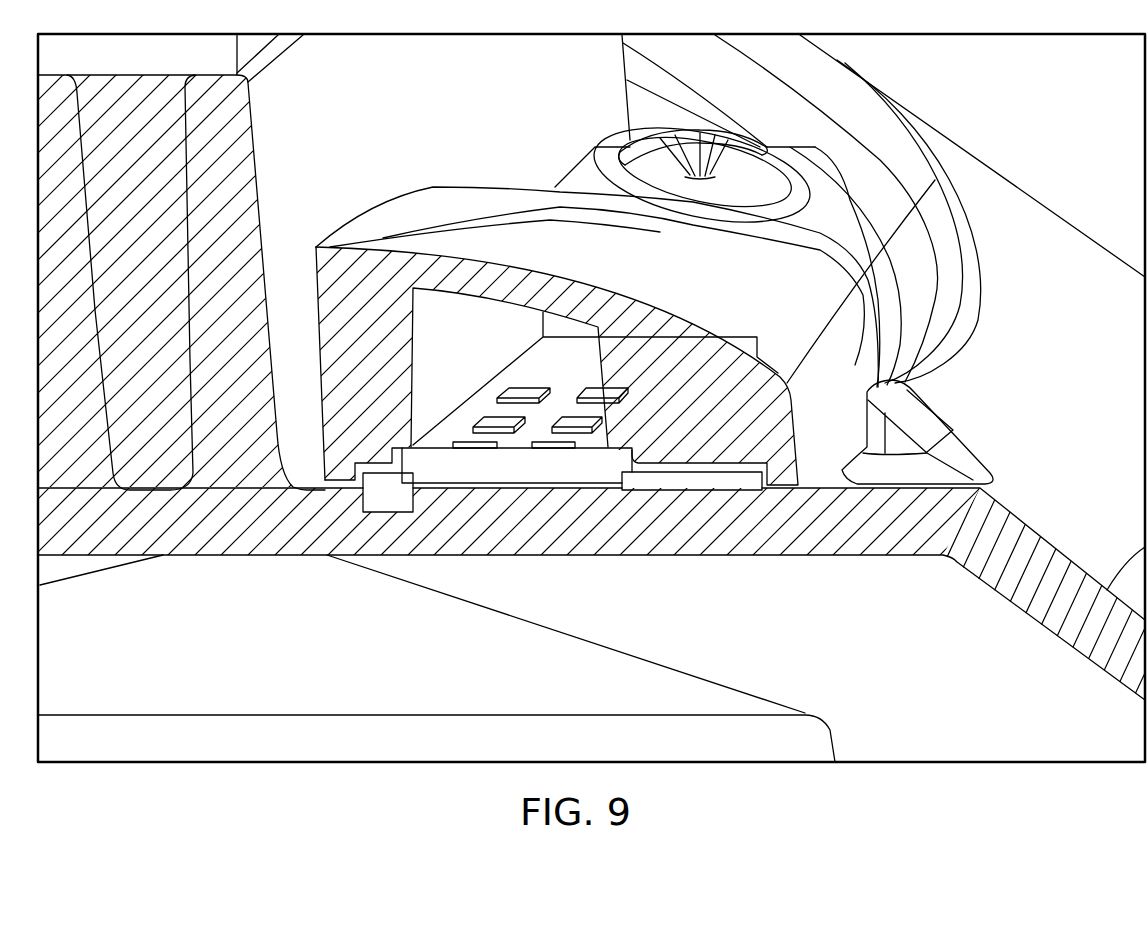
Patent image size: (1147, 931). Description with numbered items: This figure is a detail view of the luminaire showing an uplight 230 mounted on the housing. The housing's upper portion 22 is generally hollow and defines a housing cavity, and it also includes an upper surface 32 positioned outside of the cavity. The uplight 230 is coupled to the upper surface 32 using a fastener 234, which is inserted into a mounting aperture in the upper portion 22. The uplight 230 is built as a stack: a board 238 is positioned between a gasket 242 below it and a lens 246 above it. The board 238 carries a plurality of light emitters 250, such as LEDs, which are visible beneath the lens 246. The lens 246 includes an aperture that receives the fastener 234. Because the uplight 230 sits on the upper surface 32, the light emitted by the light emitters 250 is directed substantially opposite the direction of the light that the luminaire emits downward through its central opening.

The upper portion 22 is at (1055, 83).
The uplight 230 is at (338, 193).
The fastener 234 is at (697, 185).
The lens 246 is at (797, 303).
The light emitter 250 is at (525, 389).
The board 238 is at (492, 483).
The gasket 242 is at (655, 490).
The upper surface 32 is at (837, 481).